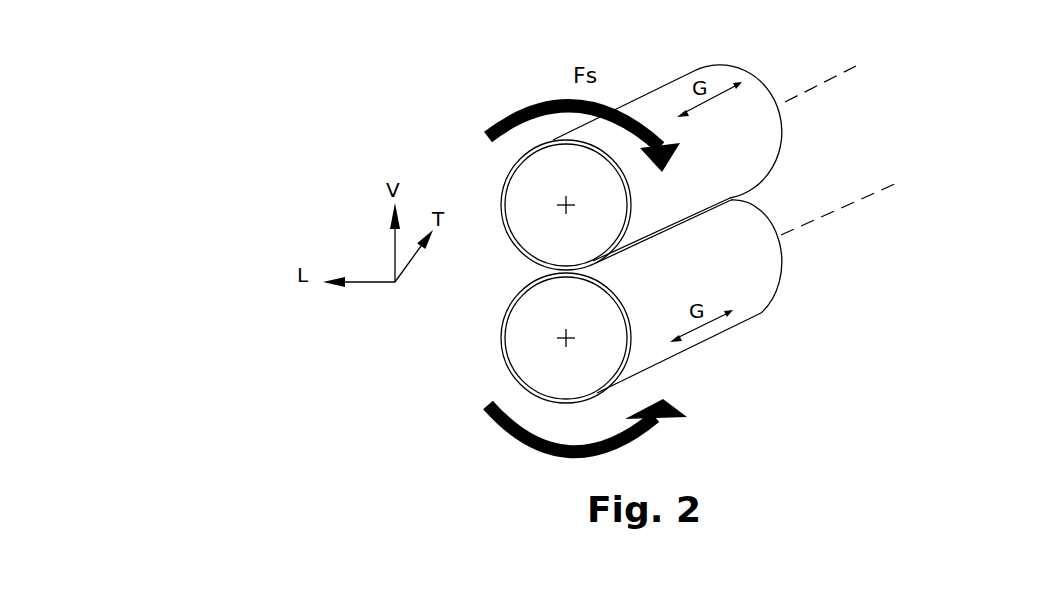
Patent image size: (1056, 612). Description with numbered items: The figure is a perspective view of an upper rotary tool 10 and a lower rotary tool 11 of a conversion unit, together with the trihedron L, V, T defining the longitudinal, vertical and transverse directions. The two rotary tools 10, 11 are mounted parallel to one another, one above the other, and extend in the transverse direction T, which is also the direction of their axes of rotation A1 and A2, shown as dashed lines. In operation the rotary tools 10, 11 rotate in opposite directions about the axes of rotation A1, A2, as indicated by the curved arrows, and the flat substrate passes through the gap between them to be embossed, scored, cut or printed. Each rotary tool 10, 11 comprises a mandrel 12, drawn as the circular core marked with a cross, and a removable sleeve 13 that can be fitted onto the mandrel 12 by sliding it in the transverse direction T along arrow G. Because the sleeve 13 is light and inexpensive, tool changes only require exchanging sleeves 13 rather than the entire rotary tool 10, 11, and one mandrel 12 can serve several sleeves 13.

The upper rotary tool 10 is at (766, 78).
The lower rotary tool 11 is at (800, 277).
The mandrel 12 is at (523, 184).
The removable sleeve 13 is at (763, 163).
The axis of rotation A1 is at (856, 66).
The axis of rotation A2 is at (897, 183).